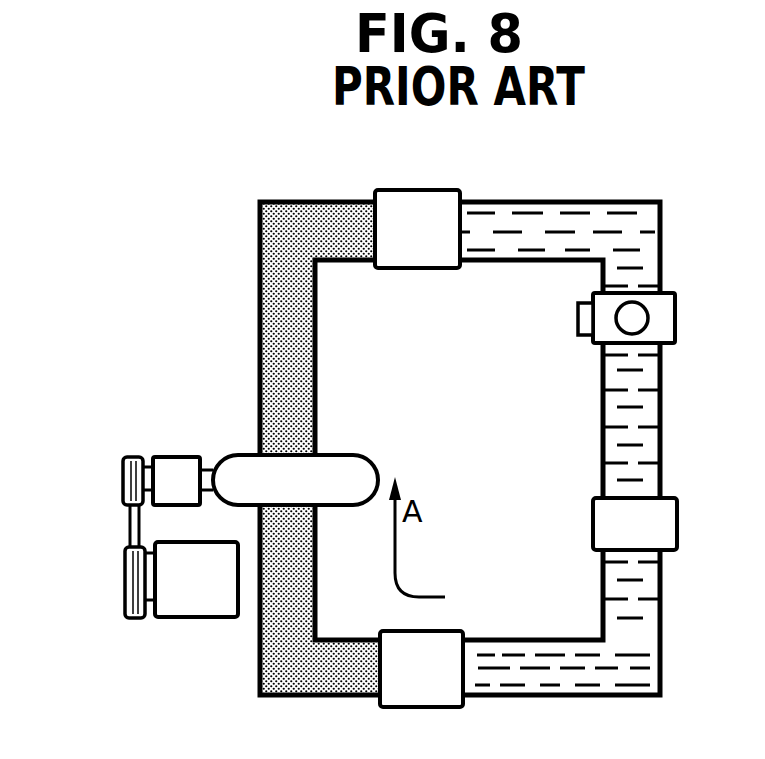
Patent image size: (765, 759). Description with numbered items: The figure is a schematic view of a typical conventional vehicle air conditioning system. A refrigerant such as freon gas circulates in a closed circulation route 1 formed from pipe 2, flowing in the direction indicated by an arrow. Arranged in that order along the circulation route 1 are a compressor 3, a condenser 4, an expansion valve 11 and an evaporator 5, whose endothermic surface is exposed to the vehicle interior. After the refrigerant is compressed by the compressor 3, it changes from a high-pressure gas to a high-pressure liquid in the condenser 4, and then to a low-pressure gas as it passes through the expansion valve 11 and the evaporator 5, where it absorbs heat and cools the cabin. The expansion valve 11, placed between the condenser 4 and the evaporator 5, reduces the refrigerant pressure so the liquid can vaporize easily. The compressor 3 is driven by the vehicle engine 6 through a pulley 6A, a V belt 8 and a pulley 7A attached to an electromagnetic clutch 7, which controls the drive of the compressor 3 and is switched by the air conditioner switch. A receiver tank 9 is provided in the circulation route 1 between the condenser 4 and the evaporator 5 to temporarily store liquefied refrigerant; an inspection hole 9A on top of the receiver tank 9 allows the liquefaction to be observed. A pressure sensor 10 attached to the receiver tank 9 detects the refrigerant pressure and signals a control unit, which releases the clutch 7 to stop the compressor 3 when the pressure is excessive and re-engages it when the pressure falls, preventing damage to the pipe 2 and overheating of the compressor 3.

The circulation route 1 is at (297, 222).
The pipe 2 is at (260, 250).
The compressor 3 is at (233, 455).
The condenser 4 is at (417, 190).
The evaporator 5 is at (430, 707).
The engine 6 is at (192, 617).
The pulley 6A is at (125, 570).
The electromagnetic clutch 7 is at (170, 457).
The pulley 7A is at (123, 480).
The V belt 8 is at (130, 527).
The receiver tank 9 is at (675, 318).
The inspection hole 9A is at (640, 308).
The pressure sensor 10 is at (578, 318).
The expansion valve 11 is at (677, 523).